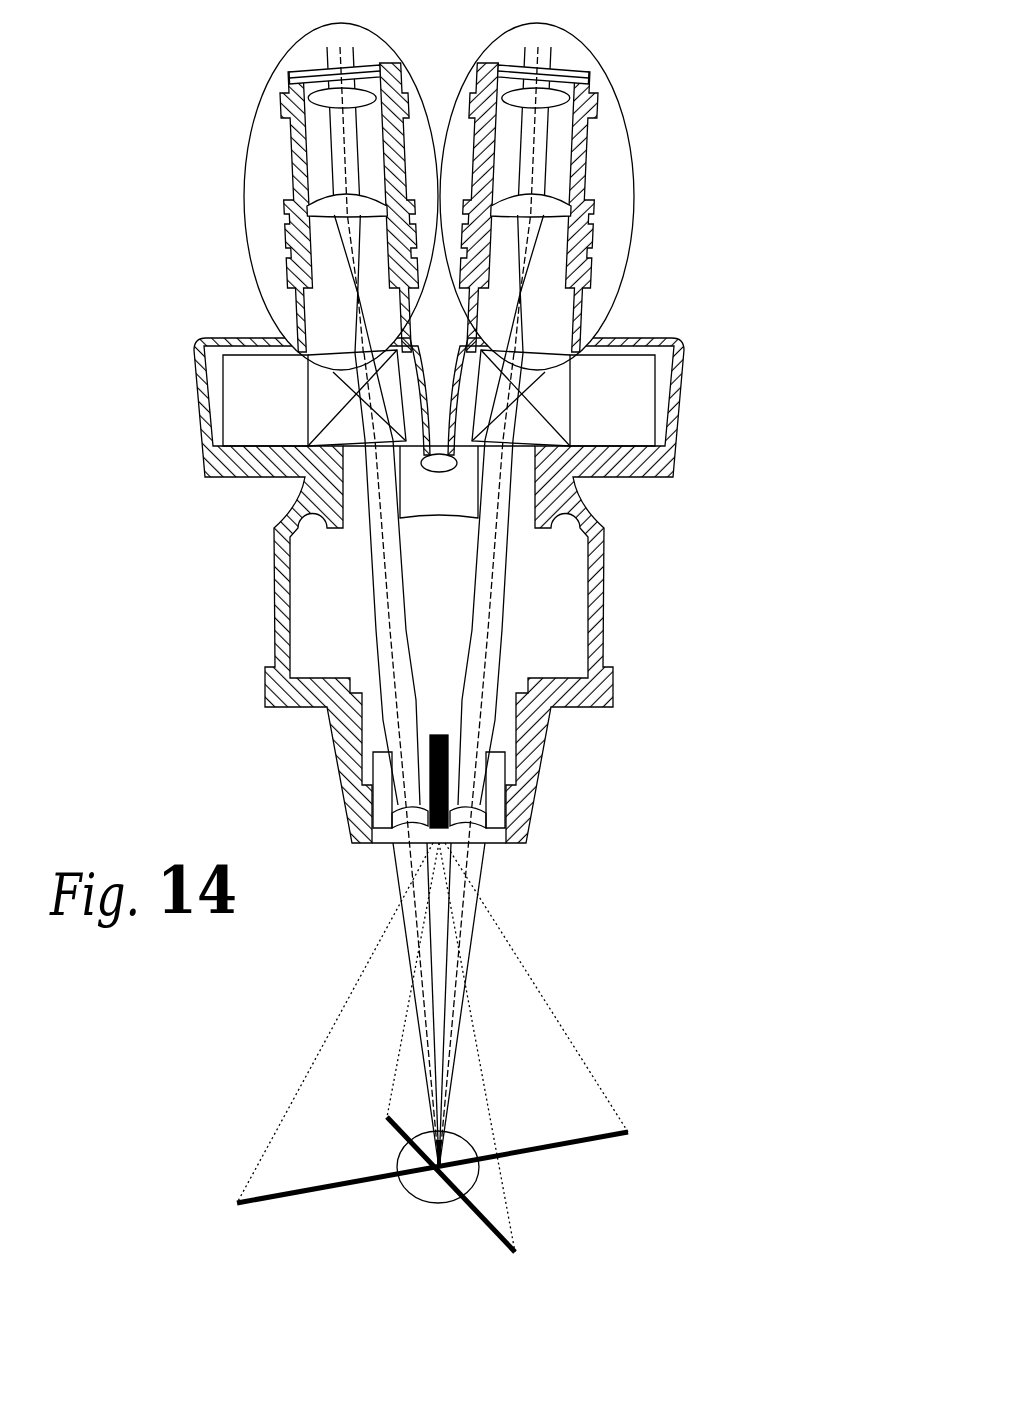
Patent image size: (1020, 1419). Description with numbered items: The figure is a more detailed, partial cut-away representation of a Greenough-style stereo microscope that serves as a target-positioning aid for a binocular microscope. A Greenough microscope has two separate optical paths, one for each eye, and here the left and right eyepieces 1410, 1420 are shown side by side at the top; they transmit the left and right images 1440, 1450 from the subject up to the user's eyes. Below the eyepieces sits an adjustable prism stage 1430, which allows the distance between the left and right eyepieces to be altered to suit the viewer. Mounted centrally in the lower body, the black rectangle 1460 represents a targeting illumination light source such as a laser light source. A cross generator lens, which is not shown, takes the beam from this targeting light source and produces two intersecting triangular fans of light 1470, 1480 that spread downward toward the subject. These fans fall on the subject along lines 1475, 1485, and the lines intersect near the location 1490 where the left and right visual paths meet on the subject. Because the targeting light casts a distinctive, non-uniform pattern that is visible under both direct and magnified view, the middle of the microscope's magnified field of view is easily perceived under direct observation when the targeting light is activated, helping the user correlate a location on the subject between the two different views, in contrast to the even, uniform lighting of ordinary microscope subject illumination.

The left eyepiece 1410 is at (245, 155).
The right eyepiece 1420 is at (628, 158).
The adjustable prism stage 1430 is at (683, 333).
The left image 1440 is at (383, 657).
The right image 1450 is at (495, 657).
The targeting illumination light source 1460 is at (439, 724).
The triangular fan of light 1470 is at (584, 1031).
The line 1475 is at (265, 1205).
The triangular fan of light 1480 is at (500, 1103).
The line 1485 is at (507, 1247).
The intersection of visual paths on the subject 1490 is at (407, 1193).